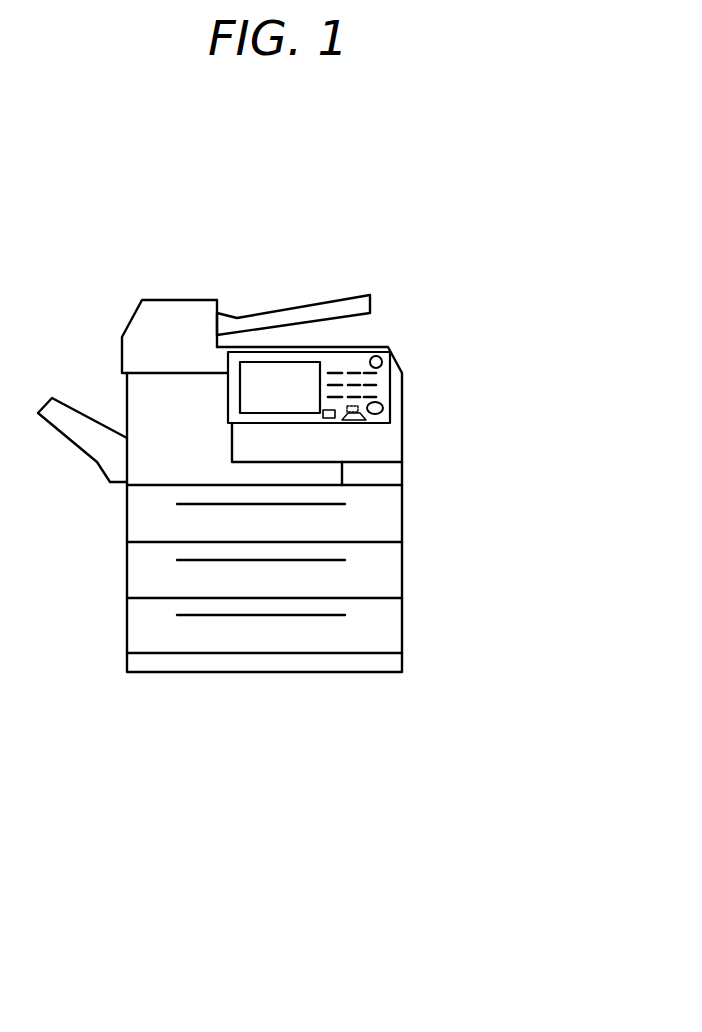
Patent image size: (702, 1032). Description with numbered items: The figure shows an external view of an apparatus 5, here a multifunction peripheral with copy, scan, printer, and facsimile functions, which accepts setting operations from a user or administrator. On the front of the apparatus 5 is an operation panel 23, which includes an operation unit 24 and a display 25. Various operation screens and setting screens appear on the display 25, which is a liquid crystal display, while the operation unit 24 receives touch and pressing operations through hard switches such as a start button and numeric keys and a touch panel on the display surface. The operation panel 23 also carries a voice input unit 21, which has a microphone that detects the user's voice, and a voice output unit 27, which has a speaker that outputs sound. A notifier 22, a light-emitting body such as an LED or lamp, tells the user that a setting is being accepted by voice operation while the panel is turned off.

The apparatus 5 is at (285, 673).
The voice input unit 21 is at (332, 420).
The notifier 22 is at (379, 356).
The operation panel 23 is at (320, 352).
The operation unit 24 is at (380, 391).
The display 25 is at (265, 362).
The voice output unit 27 is at (358, 423).